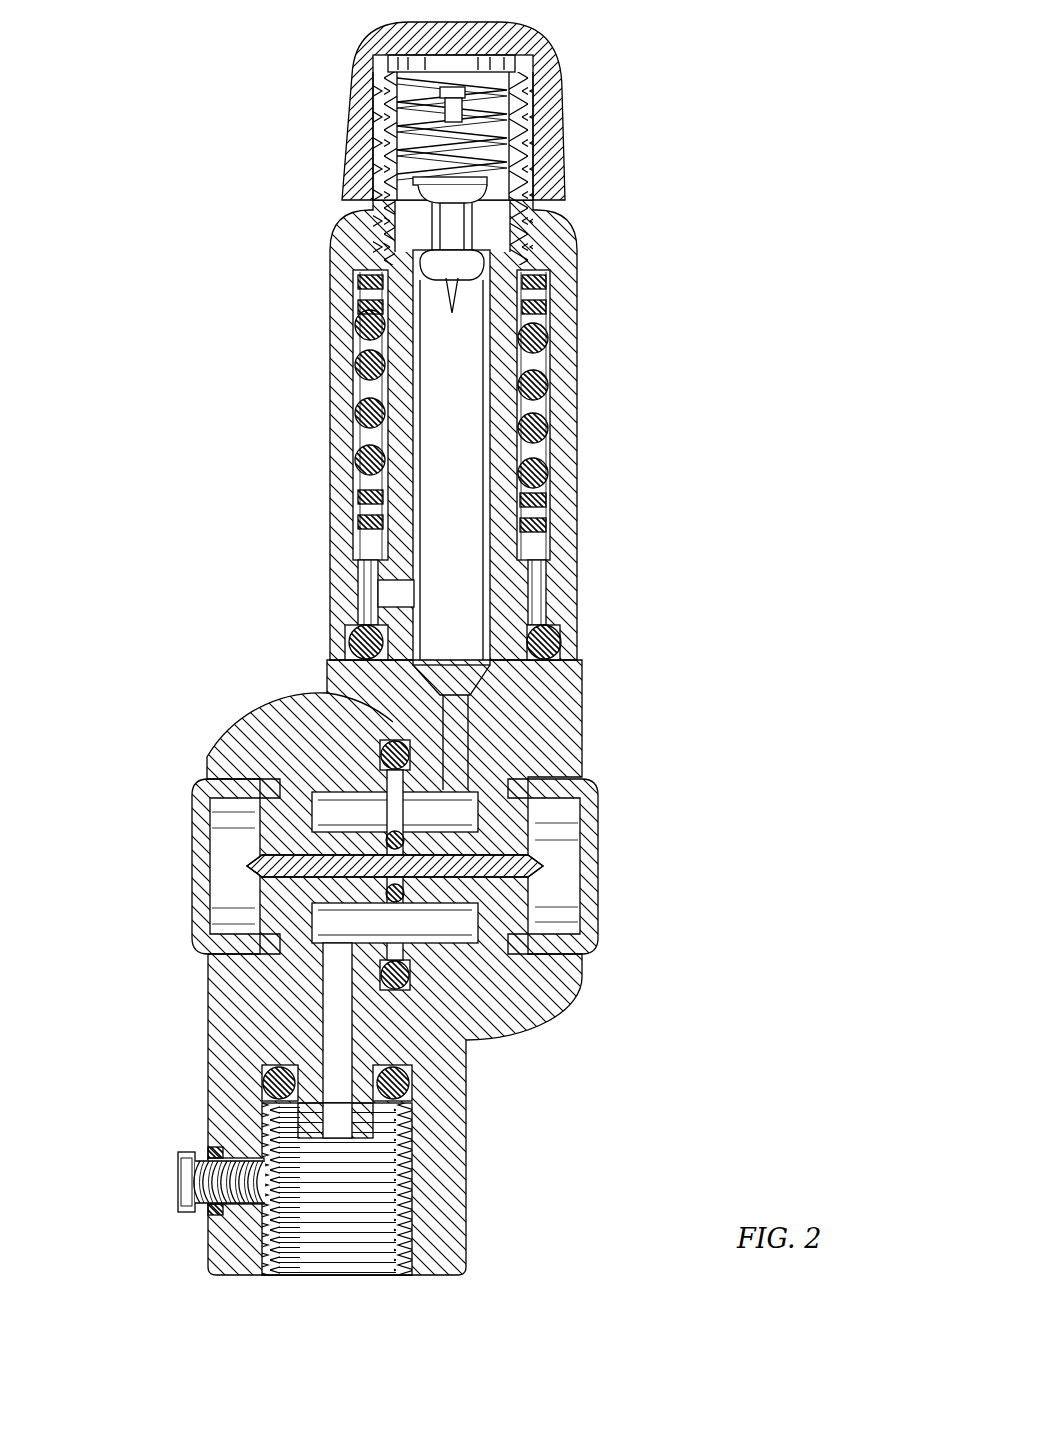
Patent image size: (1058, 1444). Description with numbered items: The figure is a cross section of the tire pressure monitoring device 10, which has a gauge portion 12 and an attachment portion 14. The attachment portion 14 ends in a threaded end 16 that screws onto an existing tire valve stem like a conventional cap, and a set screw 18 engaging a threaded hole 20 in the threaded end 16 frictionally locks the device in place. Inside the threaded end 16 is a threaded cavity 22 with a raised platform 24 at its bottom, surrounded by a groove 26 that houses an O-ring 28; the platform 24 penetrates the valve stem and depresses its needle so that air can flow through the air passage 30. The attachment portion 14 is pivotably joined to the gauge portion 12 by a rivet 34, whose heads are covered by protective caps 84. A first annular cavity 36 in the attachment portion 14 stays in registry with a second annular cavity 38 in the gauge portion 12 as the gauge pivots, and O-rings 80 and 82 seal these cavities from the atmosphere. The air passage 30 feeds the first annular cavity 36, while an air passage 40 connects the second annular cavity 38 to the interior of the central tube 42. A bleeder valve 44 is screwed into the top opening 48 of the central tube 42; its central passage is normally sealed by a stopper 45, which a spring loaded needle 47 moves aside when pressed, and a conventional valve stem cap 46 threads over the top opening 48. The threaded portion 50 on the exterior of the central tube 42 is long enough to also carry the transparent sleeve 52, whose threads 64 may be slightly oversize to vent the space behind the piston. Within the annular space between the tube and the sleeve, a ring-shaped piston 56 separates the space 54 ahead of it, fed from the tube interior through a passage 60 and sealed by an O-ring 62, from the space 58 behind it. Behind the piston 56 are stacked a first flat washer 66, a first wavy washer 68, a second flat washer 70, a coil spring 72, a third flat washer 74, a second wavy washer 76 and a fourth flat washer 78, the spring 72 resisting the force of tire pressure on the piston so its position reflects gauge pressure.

The pressure monitoring device 10 is at (680, 450).
The gauge portion 12 is at (600, 310).
The attachment portion 14 is at (565, 1132).
The threaded end 16 is at (470, 1272).
The set screw 18 is at (178, 1180).
The threaded hole 20 is at (240, 1210).
The threaded cavity 22 is at (352, 1268).
The raised platform 24 is at (400, 1140).
The groove 26 is at (268, 1085).
The O-ring 28 is at (395, 1098).
The air passage 30 is at (330, 1005).
The rivet 34 is at (510, 868).
The first annular cavity 36 is at (345, 800).
The second annular cavity 38 is at (537, 820).
The air passage 40 is at (582, 735).
The central tube 42 is at (488, 432).
The bleeder valve 44 is at (470, 180).
The stopper 45 is at (355, 135).
The valve stem cap 46 is at (570, 118).
The spring loaded needle 47 is at (350, 85).
The top opening 48 is at (500, 25).
The threaded portion 50 is at (520, 232).
The transparent sleeve 52 is at (345, 400).
The space ahead of the piston 54 is at (545, 600).
The ring-shaped piston 56 is at (370, 545).
The space behind the piston 58 is at (560, 380).
The passage 60 is at (390, 590).
The O-ring 62 is at (550, 640).
The threads 64 is at (365, 225).
The first flat washer 66 is at (545, 560).
The first wavy washer 68 is at (540, 525).
The second flat washer 70 is at (540, 500).
The coil spring 72 is at (365, 480).
The third flat washer 74 is at (360, 330).
The second wavy washer 76 is at (360, 305).
The fourth flat washer 78 is at (360, 285).
The O-ring 80 is at (395, 745).
The O-ring 82 is at (330, 905).
The protective caps 84 is at (200, 860).